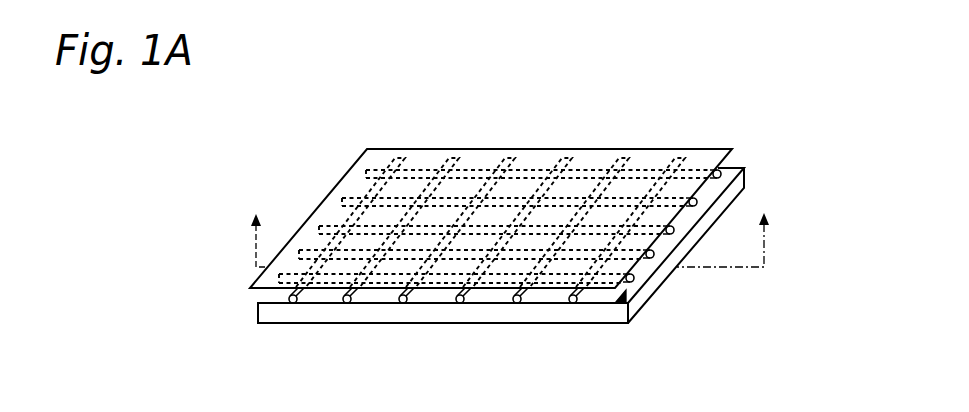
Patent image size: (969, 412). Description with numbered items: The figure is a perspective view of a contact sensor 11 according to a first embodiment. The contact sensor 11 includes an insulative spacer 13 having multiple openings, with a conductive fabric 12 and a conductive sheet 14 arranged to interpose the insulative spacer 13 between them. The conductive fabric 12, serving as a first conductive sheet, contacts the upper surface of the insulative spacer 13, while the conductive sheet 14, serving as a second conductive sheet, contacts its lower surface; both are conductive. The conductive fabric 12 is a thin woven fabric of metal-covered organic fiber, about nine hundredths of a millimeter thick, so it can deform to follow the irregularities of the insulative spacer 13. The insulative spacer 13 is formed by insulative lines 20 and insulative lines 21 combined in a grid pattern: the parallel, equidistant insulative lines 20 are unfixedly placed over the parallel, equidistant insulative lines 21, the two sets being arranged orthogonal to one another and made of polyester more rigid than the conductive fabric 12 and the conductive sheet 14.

The contact sensor 11 is at (198, 168).
The conductive fabric 12 is at (715, 148).
The insulative spacer 13 is at (622, 303).
The conductive sheet 14 is at (746, 177).
The insulative lines 20 is at (672, 234).
The insulative lines 21 is at (461, 303).